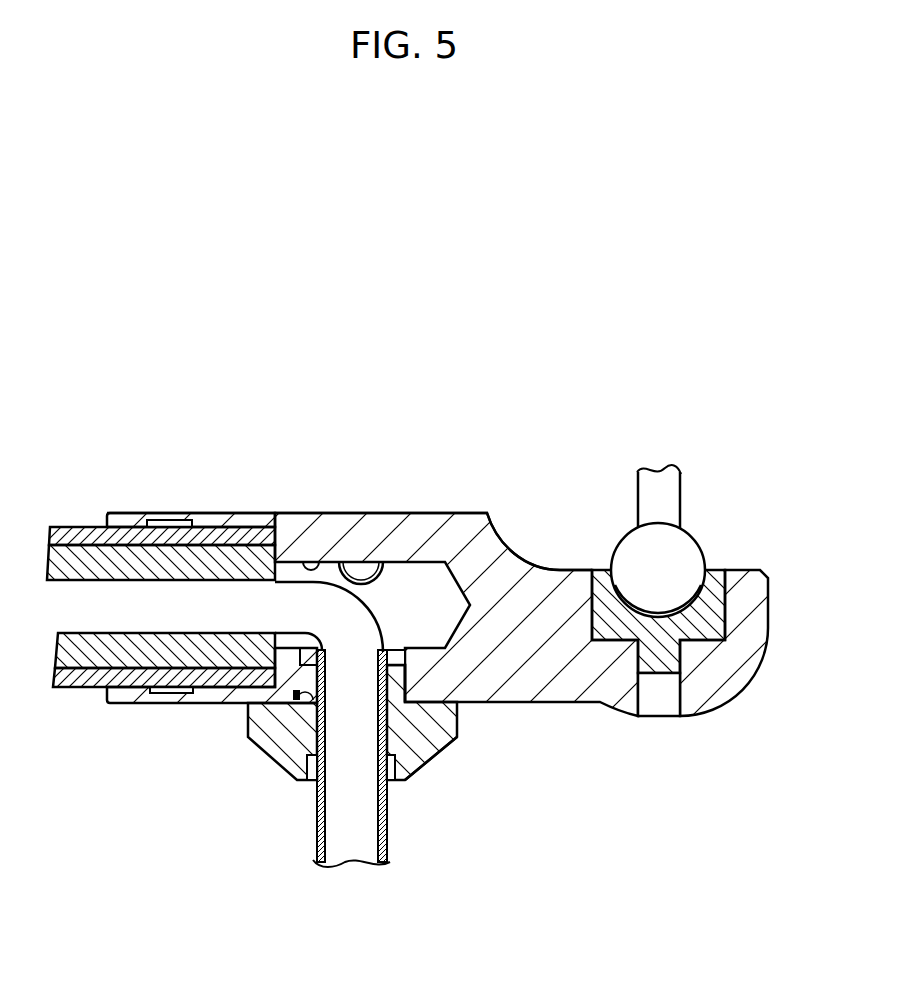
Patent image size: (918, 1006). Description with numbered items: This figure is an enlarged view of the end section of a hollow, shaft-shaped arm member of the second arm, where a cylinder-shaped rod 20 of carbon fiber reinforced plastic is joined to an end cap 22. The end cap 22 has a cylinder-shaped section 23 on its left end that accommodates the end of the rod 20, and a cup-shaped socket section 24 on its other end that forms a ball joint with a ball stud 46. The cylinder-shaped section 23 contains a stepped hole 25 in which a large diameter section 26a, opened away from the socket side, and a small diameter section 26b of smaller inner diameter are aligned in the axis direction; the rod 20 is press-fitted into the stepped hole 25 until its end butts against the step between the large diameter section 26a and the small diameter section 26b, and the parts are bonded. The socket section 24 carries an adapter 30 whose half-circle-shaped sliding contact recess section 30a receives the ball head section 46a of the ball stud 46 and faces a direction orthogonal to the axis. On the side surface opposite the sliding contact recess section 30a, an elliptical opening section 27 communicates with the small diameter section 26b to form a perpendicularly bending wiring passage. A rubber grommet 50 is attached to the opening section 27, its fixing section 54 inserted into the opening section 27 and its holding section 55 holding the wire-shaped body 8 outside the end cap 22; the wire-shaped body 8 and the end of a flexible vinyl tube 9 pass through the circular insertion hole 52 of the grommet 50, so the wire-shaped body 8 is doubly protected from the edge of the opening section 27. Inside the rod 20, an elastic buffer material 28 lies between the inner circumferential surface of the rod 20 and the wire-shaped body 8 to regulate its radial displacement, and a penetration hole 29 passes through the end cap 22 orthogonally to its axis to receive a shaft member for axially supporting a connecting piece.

The wire-shaped body 8 is at (343, 810).
The tube 9 is at (316, 838).
The rod 20 is at (74, 537).
The end cap 22 is at (418, 420).
The cylinder-shaped section 23 is at (403, 500).
The socket section 24 is at (565, 562).
The stepped hole 25 is at (203, 420).
The large diameter section 26a is at (208, 537).
The small diameter section 26b is at (310, 566).
The opening section 27 is at (302, 710).
The buffer material 28 is at (85, 655).
The penetration hole 29 is at (361, 578).
The adapter 30 is at (710, 633).
The sliding contact recess section 30a is at (692, 586).
The ball stud 46 is at (700, 478).
The ball head section 46a is at (683, 557).
The grommet 50 is at (436, 775).
The insertion hole 52 is at (382, 744).
The fixing section 54 is at (397, 675).
The holding section 55 is at (428, 737).